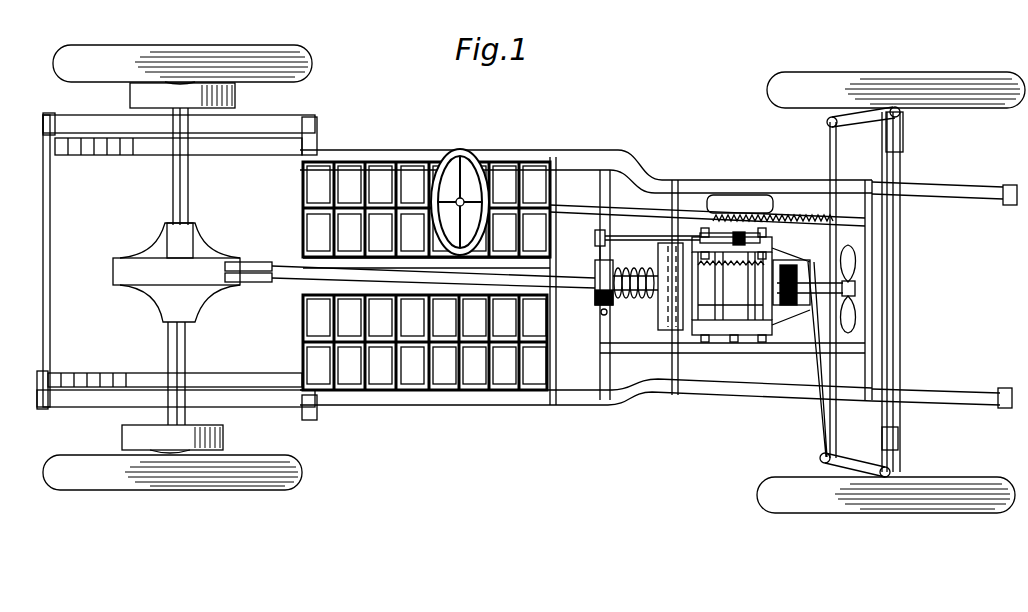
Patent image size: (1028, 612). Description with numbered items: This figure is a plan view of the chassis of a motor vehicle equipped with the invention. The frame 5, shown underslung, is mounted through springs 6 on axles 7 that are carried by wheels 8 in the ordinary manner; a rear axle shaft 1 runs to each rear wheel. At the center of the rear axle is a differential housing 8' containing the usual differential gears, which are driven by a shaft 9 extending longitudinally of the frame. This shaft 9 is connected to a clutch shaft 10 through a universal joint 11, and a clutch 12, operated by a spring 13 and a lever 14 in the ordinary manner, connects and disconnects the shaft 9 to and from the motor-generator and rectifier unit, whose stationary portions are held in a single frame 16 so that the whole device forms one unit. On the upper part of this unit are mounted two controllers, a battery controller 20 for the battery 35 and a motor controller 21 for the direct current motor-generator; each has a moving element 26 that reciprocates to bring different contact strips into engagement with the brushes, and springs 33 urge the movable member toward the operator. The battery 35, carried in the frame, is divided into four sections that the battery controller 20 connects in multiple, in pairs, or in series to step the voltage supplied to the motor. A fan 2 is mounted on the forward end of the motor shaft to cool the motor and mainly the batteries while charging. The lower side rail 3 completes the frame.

The rear axle shaft 1 is at (173, 189).
The fan 2 is at (858, 258).
The frame side rail 3 is at (425, 392).
The frame 5 is at (538, 163).
The springs 6 is at (100, 153).
The axles 7 is at (168, 345).
The wheels 8 is at (534, 282).
The differential housing 8' is at (192, 267).
The shaft 9 is at (322, 272).
The clutch shaft 10 is at (630, 274).
The universal joint 11 is at (598, 310).
The clutch 12 is at (668, 303).
The spring 13 is at (735, 270).
The lever 14 is at (782, 337).
The frame 16 is at (716, 290).
The battery controller 20 is at (735, 232).
The motor controller 21 is at (745, 338).
The moving element 26 is at (812, 235).
The springs 33 is at (753, 205).
The battery 35 is at (395, 166).